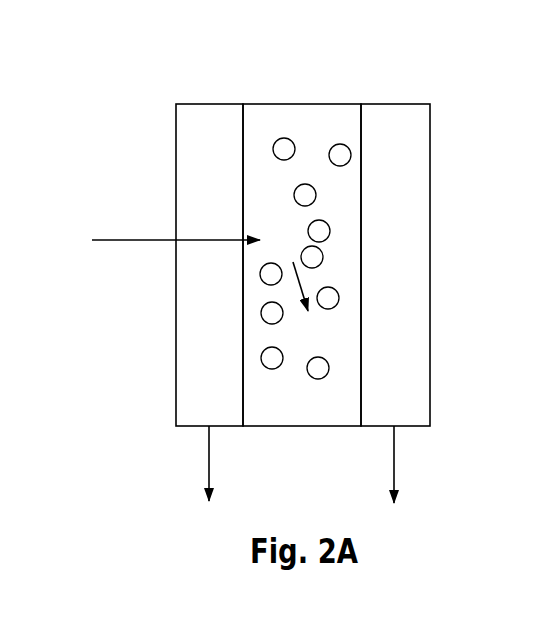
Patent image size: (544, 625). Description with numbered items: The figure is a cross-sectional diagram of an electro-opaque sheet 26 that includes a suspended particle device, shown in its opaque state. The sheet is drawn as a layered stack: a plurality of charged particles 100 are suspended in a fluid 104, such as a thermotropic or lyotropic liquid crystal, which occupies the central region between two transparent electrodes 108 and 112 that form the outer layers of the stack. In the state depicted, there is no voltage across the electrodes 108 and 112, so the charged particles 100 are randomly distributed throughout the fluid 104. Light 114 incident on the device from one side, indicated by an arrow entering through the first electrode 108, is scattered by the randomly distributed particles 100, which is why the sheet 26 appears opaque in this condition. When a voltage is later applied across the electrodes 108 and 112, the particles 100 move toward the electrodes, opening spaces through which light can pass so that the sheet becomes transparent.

The electro-opaque sheet 26 is at (273, 273).
The charged particles 100 is at (295, 137).
The fluid 104 is at (343, 316).
The transparent electrode 108 is at (188, 377).
The transparent electrode 112 is at (393, 395).
The light 114 is at (110, 249).